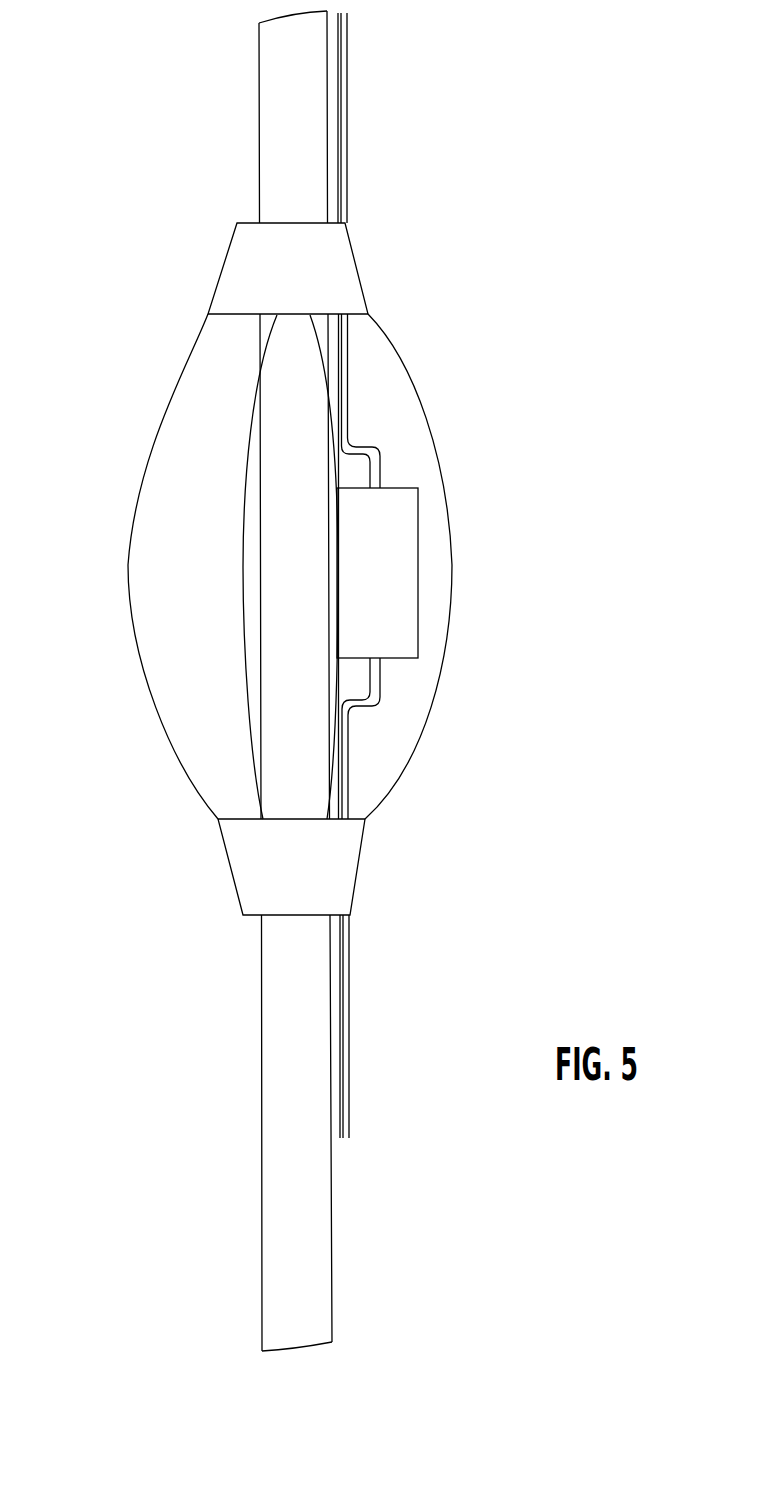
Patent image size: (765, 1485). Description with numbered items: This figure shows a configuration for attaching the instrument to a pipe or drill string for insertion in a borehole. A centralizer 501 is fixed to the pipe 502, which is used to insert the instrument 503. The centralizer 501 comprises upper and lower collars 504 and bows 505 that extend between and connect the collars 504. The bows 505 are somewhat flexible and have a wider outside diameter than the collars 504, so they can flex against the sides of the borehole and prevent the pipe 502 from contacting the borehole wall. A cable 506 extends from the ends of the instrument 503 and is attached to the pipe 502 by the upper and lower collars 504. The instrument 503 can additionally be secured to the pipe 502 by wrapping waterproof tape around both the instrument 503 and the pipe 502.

The centralizer 501 is at (279, 566).
The pipe 502 is at (332, 1238).
The instrument 503 is at (418, 622).
The upper and lower collars 504 is at (357, 267).
The bows 505 is at (438, 477).
The cable 506 is at (348, 104).